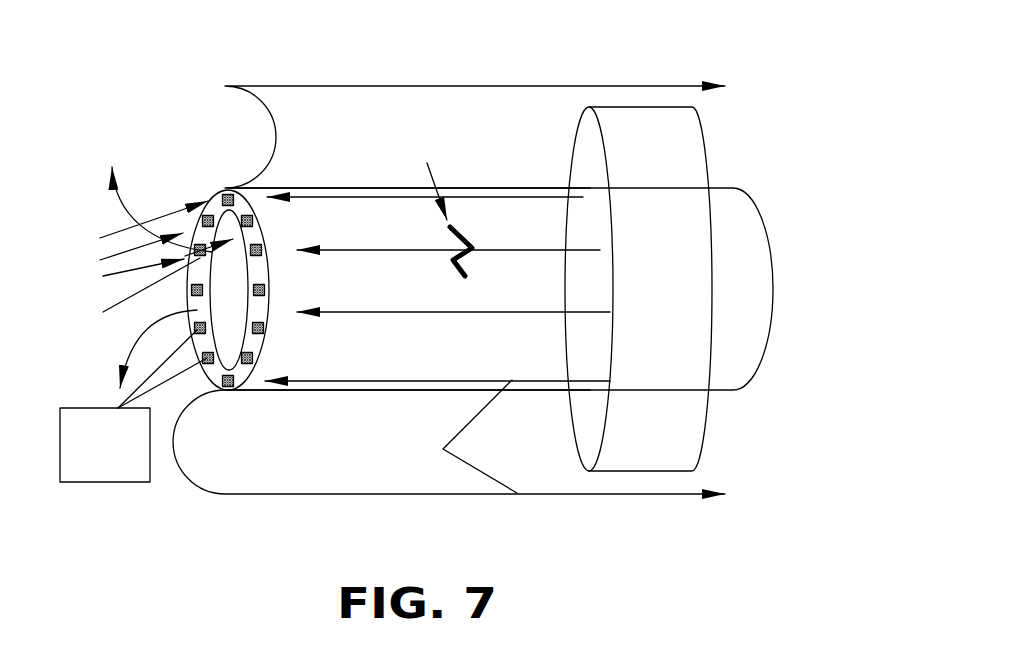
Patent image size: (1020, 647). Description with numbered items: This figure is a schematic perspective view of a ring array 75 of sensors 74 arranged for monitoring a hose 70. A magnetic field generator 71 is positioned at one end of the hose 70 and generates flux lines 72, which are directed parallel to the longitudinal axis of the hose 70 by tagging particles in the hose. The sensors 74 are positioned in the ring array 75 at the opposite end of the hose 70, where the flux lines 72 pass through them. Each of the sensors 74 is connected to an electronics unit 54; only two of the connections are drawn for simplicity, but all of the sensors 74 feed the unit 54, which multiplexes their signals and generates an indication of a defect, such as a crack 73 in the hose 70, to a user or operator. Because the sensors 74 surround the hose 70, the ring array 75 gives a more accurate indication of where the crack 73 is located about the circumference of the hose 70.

The hose 70 is at (750, 225).
The magnetic field generator 71 is at (692, 432).
The flux lines 72 is at (434, 86).
The crack 73 is at (463, 236).
The sensors 74 is at (252, 220).
The ring array 75 is at (52, 291).
The electronics unit 54 is at (133, 406).